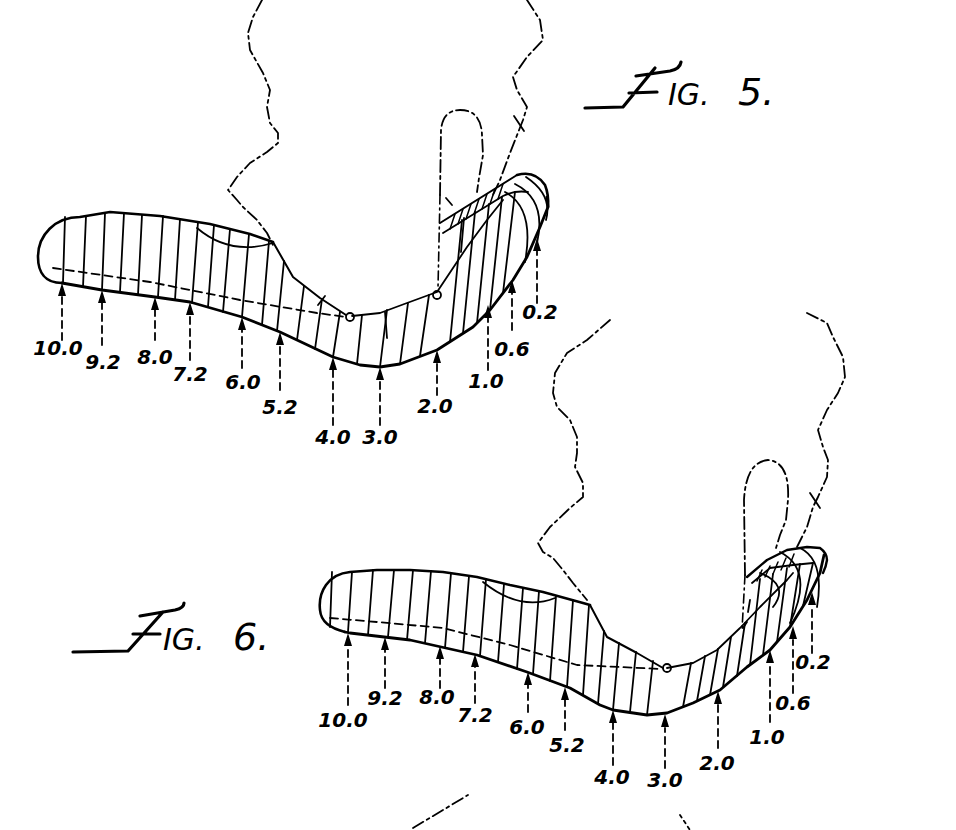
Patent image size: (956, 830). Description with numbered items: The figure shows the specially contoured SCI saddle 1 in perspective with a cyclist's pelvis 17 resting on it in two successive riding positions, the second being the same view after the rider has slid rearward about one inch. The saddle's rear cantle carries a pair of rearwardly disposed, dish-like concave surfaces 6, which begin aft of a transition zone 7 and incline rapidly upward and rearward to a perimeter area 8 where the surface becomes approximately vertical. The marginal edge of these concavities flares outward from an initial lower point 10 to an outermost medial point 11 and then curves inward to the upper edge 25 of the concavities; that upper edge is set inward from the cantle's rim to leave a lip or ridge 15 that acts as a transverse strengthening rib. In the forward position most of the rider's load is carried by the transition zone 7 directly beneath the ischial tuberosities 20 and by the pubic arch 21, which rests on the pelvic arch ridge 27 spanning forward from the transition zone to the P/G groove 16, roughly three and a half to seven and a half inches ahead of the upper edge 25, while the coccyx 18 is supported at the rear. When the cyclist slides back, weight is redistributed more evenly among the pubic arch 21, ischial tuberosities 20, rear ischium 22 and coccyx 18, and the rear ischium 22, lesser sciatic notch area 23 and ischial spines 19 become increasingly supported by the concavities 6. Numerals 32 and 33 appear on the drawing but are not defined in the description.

In FIG. 5, the SCI saddle 1 is at (162, 202).
In FIG. 6, the SCI saddle 1 is at (475, 565).
In FIG. 5, the concave dish surfaces 6 is at (460, 252).
In FIG. 6, the concave dish surfaces 6 is at (750, 600).
In FIG. 5, the transition zone 7 is at (358, 346).
In FIG. 6, the transition zone 7 is at (612, 655).
In FIG. 5, the perimeter area 8 is at (487, 218).
In FIG. 5, the initial lower point 10 is at (388, 313).
In FIG. 5, the outermost medial point 11 is at (437, 328).
In FIG. 6, the outermost medial point 11 is at (584, 635).
In FIG. 5, the lip or ridge 15 is at (547, 195).
In FIG. 5, the P/G groove 16 is at (232, 235).
In FIG. 6, the P/G groove 16 is at (533, 590).
In FIG. 5, the pelvis 17 is at (238, 73).
In FIG. 6, the pelvis 17 is at (553, 467).
In FIG. 5, the coccyx 18 is at (474, 185).
In FIG. 6, the coccyx 18 is at (762, 557).
In FIG. 5, the ischial spines 19 is at (446, 198).
In FIG. 5, the ischial tuberosities 20 is at (353, 313).
In FIG. 6, the ischial tuberosities 20 is at (668, 664).
In FIG. 5, the pubic arch 21 is at (299, 282).
In FIG. 6, the pubic arch 21 is at (608, 637).
In FIG. 5, the rear ischium 22 is at (435, 292).
In FIG. 6, the rear ischium 22 is at (743, 628).
In FIG. 5, the lesser sciatic notch area 23 is at (437, 224).
In FIG. 6, the upper edge of the concavities 25 is at (800, 565).
In FIG. 5, the pelvic arch ridge 27 is at (325, 296).
In FIG. 6, the toe cap top 32 is at (810, 548).
In FIG. 5, the foot outline mark 33 is at (520, 124).
In FIG. 6, the foot outline mark 33 is at (822, 503).